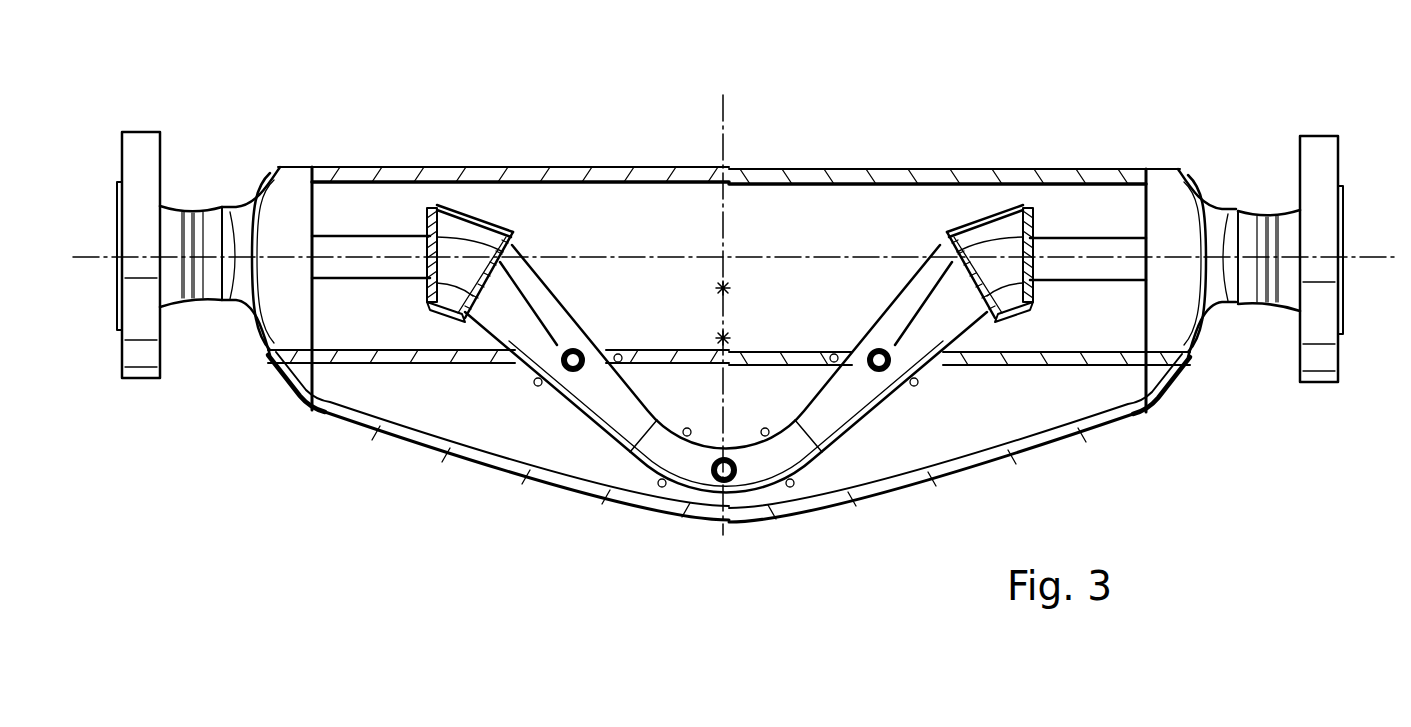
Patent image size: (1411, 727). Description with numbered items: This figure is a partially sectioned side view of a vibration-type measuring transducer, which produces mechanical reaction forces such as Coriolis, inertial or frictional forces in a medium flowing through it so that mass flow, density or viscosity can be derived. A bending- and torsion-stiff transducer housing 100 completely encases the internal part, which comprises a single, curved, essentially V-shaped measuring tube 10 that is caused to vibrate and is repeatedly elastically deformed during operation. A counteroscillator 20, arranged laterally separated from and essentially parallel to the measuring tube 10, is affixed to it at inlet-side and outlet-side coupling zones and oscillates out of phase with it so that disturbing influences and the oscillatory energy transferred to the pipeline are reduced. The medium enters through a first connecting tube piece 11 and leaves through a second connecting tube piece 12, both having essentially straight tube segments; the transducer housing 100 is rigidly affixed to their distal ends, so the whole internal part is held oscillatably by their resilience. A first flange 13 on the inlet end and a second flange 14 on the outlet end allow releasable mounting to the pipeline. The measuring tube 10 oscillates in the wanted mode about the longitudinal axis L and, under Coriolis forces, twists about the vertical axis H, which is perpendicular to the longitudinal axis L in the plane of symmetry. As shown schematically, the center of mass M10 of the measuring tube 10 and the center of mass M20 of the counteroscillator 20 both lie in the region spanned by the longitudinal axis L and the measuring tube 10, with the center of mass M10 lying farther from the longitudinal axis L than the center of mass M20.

The transducer housing 100 is at (604, 177).
The measuring tube 10 is at (530, 323).
The counteroscillator 20 is at (547, 255).
The first connecting tube piece 11 is at (382, 247).
The second connecting tube piece 12 is at (1084, 248).
The first flange 13 is at (141, 147).
The second flange 14 is at (1320, 147).
The center of mass of the measuring tube M10 is at (751, 341).
The center of mass of the counteroscillator M20 is at (751, 291).
The vertical axis H is at (722, 525).
The longitudinal axis L is at (80, 250).